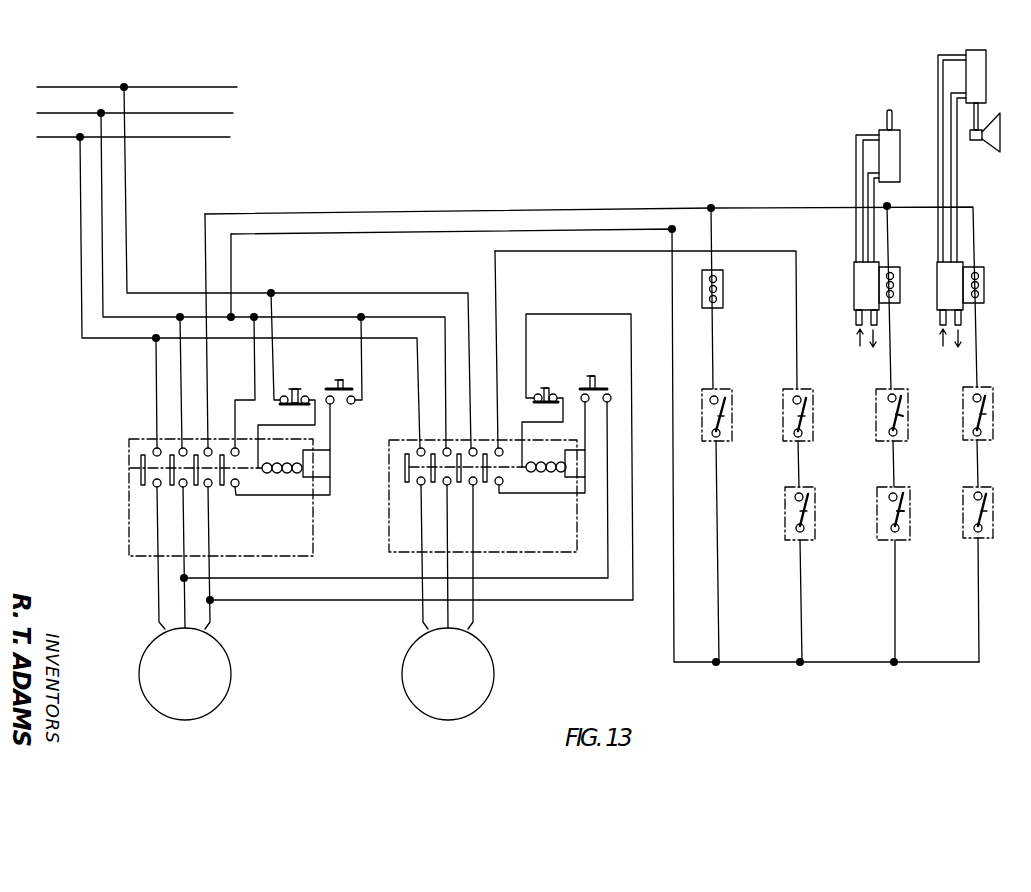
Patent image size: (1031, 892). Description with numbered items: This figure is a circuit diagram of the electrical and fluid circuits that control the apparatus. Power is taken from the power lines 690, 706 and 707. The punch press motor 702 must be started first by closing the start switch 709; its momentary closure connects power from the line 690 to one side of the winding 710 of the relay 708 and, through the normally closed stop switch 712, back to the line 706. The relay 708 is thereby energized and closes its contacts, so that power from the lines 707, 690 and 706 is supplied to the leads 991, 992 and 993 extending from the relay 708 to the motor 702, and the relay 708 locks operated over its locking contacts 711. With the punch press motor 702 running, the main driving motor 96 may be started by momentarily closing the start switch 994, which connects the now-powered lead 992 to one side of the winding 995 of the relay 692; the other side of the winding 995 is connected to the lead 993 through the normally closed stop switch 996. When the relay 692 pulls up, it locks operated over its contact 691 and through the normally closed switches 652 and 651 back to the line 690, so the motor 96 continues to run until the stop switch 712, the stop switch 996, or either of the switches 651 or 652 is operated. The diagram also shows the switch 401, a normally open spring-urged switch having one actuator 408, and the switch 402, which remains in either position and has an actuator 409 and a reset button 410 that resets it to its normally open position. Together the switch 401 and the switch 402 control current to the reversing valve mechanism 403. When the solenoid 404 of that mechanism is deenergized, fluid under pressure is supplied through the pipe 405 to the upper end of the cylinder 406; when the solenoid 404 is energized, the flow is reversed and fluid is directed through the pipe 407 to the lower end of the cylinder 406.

The power line 706 is at (237, 87).
The power line 690 is at (233, 113).
The power line 707 is at (230, 137).
The relay 708 is at (128, 467).
The lead 991 is at (157, 513).
The lead 992 is at (185, 529).
The lead 993 is at (210, 547).
The locking contacts 711 is at (224, 463).
The stop switch 712 is at (309, 379).
The start switch 709 is at (353, 386).
The winding 710 is at (317, 479).
The driving motor 702 is at (231, 665).
The motor 96 is at (494, 665).
The relay 692 is at (395, 552).
The contact 691 is at (501, 448).
The stop switch 996 is at (560, 378).
The start switch 994 is at (605, 373).
The winding 995 is at (541, 477).
The switch 652 is at (810, 402).
The switch 651 is at (814, 498).
The switch 401 is at (908, 400).
The actuator 408 is at (903, 418).
The switch 402 is at (878, 540).
The reset button 410 is at (891, 512).
The actuator 409 is at (905, 513).
The reversing valve mechanism 403 is at (855, 268).
The solenoid 404 is at (897, 270).
The pipe 405 is at (856, 164).
The cylinder 406 is at (899, 158).
The pipe 407 is at (876, 196).